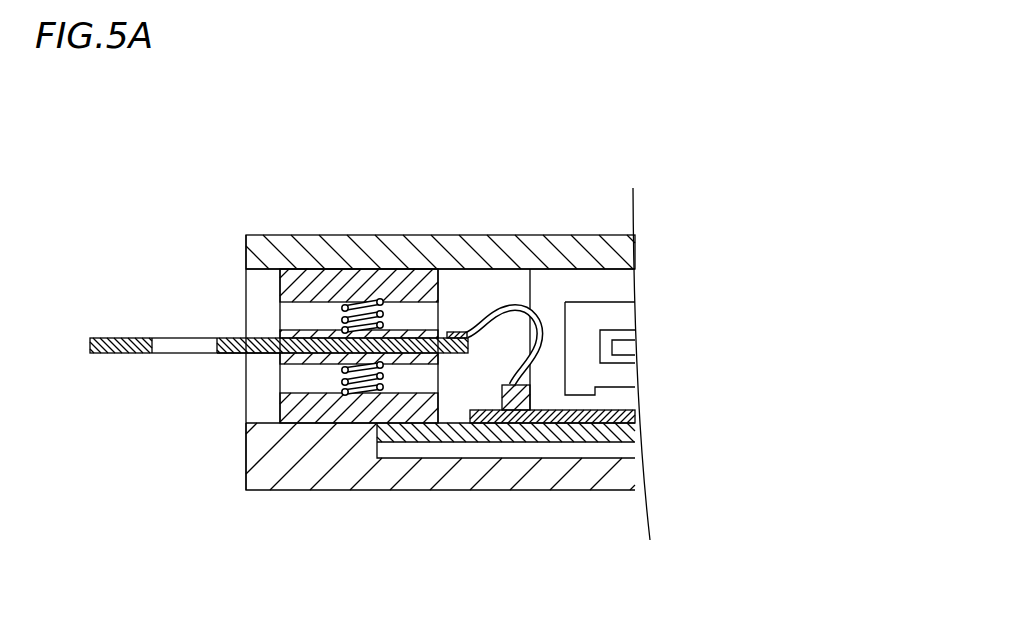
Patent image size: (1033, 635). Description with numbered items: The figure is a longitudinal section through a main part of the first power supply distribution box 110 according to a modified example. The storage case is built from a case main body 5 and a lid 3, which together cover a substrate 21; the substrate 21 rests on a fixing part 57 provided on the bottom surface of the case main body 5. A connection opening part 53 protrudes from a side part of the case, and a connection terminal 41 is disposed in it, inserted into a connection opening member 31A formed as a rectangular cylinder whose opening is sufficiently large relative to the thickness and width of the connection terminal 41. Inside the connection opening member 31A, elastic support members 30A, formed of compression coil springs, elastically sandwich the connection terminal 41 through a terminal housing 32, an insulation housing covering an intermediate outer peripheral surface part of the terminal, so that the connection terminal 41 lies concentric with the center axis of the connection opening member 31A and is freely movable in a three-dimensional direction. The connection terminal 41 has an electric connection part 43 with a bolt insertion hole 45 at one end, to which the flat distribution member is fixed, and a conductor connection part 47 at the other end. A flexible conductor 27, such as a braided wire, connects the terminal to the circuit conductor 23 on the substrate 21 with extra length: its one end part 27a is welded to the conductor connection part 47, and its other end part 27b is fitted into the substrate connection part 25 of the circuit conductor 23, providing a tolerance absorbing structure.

The first power supply distribution box 110 is at (479, 152).
The lid 3 is at (586, 232).
The case main body 5 is at (588, 494).
The connection opening part 53 is at (244, 286).
The connection opening member 31A is at (321, 268).
The terminal housing 32 is at (285, 402).
The elastic support member 30A is at (392, 310).
The electric connection part 43 is at (118, 337).
The bolt insertion hole 45 is at (172, 337).
The connection terminal 41 is at (224, 358).
The flexible conductor 27 is at (541, 317).
The one end part of the flexible conductor 27a is at (463, 331).
The other end part of the flexible conductor 27b is at (603, 344).
The circuit conductor 23 is at (623, 404).
The substrate connection part 25 is at (501, 396).
The conductor connection part 47 is at (462, 412).
The fixing part 57 is at (383, 457).
The substrate 21 is at (618, 446).